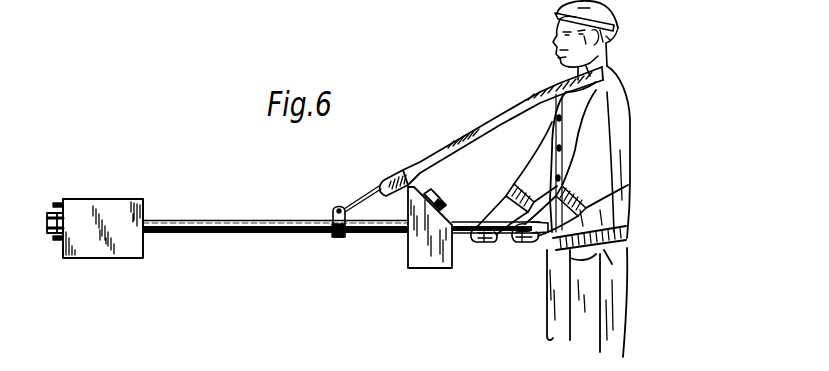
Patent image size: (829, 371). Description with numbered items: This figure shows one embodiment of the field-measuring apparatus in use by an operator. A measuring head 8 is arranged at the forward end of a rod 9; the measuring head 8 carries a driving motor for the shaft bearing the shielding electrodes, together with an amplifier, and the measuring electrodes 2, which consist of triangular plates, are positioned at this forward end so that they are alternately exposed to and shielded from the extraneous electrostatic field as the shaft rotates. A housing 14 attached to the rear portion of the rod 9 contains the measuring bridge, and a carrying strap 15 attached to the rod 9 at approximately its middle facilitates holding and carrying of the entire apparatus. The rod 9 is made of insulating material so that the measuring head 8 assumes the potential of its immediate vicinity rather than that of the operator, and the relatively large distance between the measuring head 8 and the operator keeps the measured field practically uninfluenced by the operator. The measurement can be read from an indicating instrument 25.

The measuring electrodes 2 is at (47, 233).
The measuring head 8 is at (114, 208).
The rod 9 is at (198, 221).
The housing 14 is at (432, 258).
The carrying strap 15 is at (474, 139).
The indicating instrument 25 is at (445, 203).